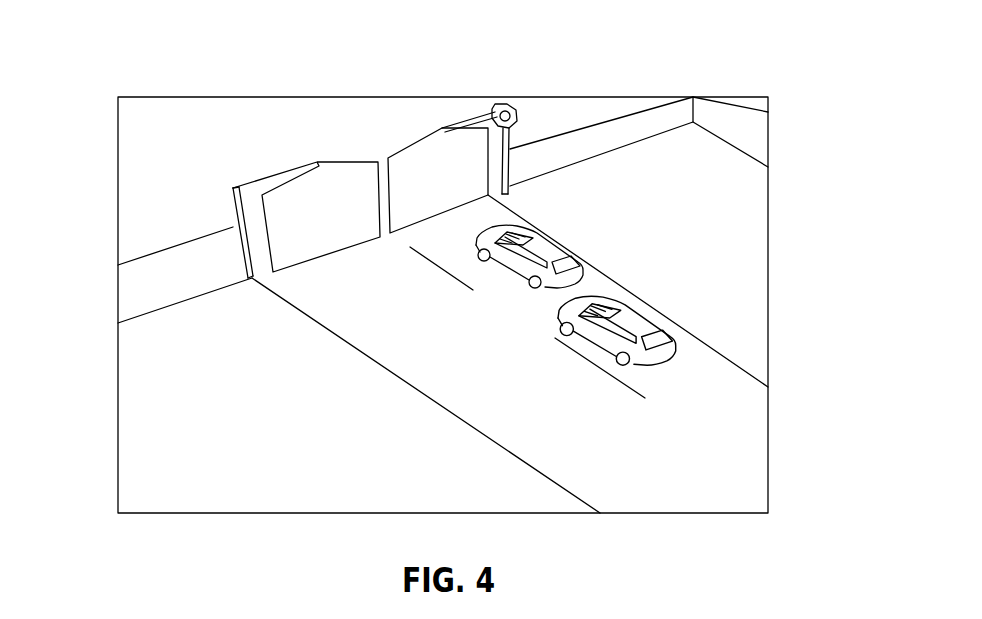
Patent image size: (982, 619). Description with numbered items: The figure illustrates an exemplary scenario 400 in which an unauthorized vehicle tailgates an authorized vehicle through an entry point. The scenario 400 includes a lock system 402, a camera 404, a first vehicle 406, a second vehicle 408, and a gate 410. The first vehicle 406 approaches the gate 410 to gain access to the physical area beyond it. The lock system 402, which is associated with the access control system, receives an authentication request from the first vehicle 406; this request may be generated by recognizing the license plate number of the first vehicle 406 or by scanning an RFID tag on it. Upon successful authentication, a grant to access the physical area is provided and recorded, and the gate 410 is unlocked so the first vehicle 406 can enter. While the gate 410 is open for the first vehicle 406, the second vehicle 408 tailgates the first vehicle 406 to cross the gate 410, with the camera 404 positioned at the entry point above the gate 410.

The exemplary scenario 400 is at (96, 56).
The lock system 402 is at (432, 118).
The camera 404 is at (512, 108).
The first vehicle 406 is at (525, 243).
The second vehicle 408 is at (628, 315).
The gate 410 is at (290, 225).